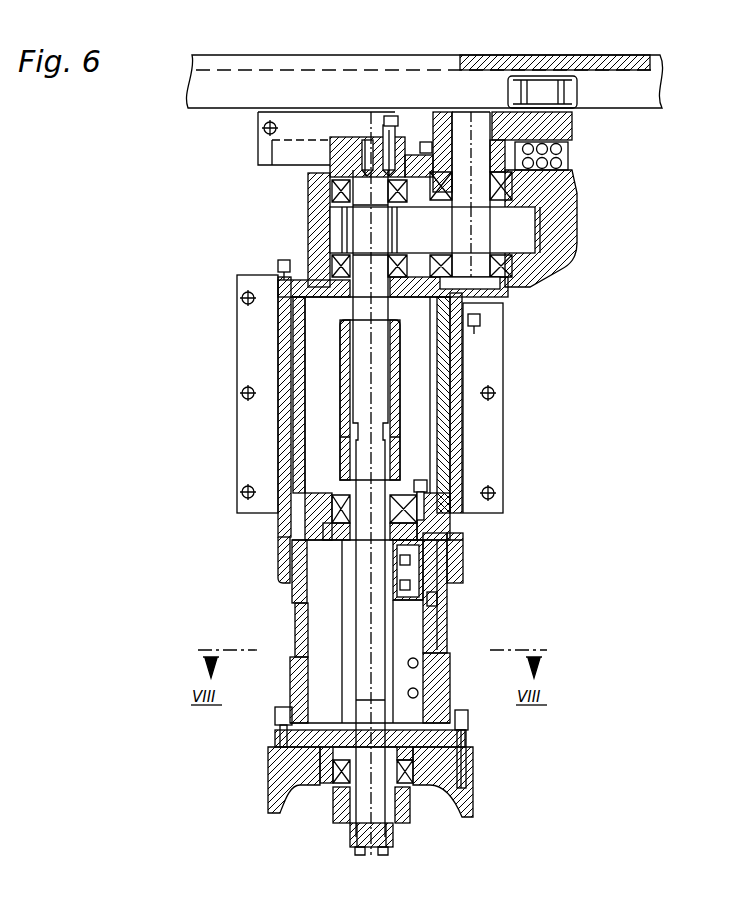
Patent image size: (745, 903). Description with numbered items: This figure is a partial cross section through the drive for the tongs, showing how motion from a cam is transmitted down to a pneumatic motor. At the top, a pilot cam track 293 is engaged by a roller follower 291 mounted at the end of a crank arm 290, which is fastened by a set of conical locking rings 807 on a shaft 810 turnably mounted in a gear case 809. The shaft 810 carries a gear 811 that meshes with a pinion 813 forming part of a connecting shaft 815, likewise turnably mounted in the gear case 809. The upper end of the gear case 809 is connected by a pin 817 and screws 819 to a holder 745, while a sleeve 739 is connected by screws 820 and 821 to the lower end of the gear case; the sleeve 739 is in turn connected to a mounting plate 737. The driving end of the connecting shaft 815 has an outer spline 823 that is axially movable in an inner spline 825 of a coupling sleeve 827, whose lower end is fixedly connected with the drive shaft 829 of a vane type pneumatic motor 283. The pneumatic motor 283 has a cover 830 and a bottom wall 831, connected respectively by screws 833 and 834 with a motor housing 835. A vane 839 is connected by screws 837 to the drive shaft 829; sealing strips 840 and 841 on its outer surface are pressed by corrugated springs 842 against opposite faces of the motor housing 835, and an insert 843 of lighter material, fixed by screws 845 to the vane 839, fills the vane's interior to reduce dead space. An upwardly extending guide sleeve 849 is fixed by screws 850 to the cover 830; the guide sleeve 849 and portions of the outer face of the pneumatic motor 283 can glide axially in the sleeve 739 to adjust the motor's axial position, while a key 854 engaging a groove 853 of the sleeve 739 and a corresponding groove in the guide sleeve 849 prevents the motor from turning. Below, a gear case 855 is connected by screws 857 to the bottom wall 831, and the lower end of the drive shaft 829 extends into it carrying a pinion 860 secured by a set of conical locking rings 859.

The pilot cam track 293 is at (488, 78).
The roller follower 291 is at (557, 86).
The crank arm 290 is at (572, 130).
The holder 745 is at (288, 147).
The gear case 809 is at (302, 188).
The gear 811 is at (413, 228).
The pinion 813 is at (340, 228).
The connecting shaft 815 is at (345, 272).
The pin 817 is at (364, 148).
The conical locking rings 807 is at (438, 140).
The screws 819 is at (390, 126).
The shaft 810 is at (417, 148).
The screws 820 is at (278, 266).
The groove 853 is at (300, 478).
The key 854 is at (290, 453).
The outer spline 823 is at (297, 313).
The mounting plate 737 is at (488, 423).
The screws 821 is at (480, 322).
The coupling sleeve 827 is at (345, 398).
The inner spline 825 is at (347, 437).
The guide sleeve 849 is at (440, 432).
The cover 830 is at (440, 535).
The screws 850 is at (421, 483).
The screws 833 is at (286, 518).
The sleeve 739 is at (455, 543).
The vane 839 is at (423, 630).
The vane type pneumatic motor 283 is at (452, 612).
The motor housing 835 is at (437, 630).
The sealing strip 841 is at (432, 645).
The screws 845 is at (395, 665).
The sealing strip 840 is at (395, 548).
The screws 837 is at (400, 565).
The insert 843 is at (398, 583).
The corrugated springs 842 is at (432, 600).
The drive shaft 829 is at (355, 468).
The screws 857 is at (283, 712).
The bottom wall 831 is at (468, 745).
The screws 834 is at (300, 742).
The gear case 855 is at (480, 774).
The pinion 860 is at (338, 820).
The conical locking rings 859 is at (348, 820).